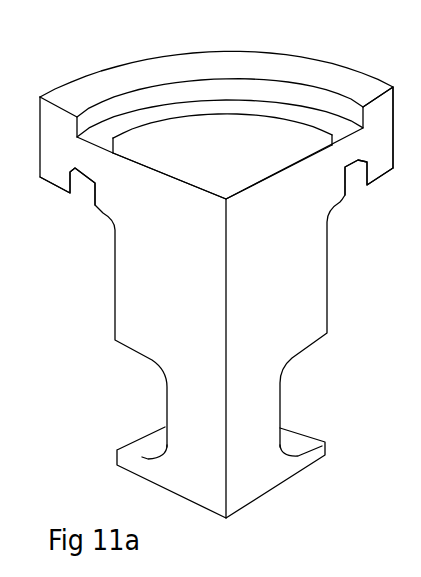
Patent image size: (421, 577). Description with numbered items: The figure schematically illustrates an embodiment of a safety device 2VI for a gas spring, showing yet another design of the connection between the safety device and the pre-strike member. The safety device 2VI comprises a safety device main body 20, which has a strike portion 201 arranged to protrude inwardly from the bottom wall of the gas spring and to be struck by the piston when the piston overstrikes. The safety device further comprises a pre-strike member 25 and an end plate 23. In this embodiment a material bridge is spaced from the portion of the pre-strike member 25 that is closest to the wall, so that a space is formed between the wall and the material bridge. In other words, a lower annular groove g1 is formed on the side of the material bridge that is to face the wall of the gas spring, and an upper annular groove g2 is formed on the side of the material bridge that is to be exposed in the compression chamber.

The safety device main body 20 is at (137, 297).
The strike portion 201 is at (262, 148).
The upper annular groove g2 is at (323, 120).
The lower annular groove g1 is at (87, 187).
The pre-strike member 25 is at (382, 148).
The end plate 23 is at (140, 450).
The safety device 2VI is at (358, 473).